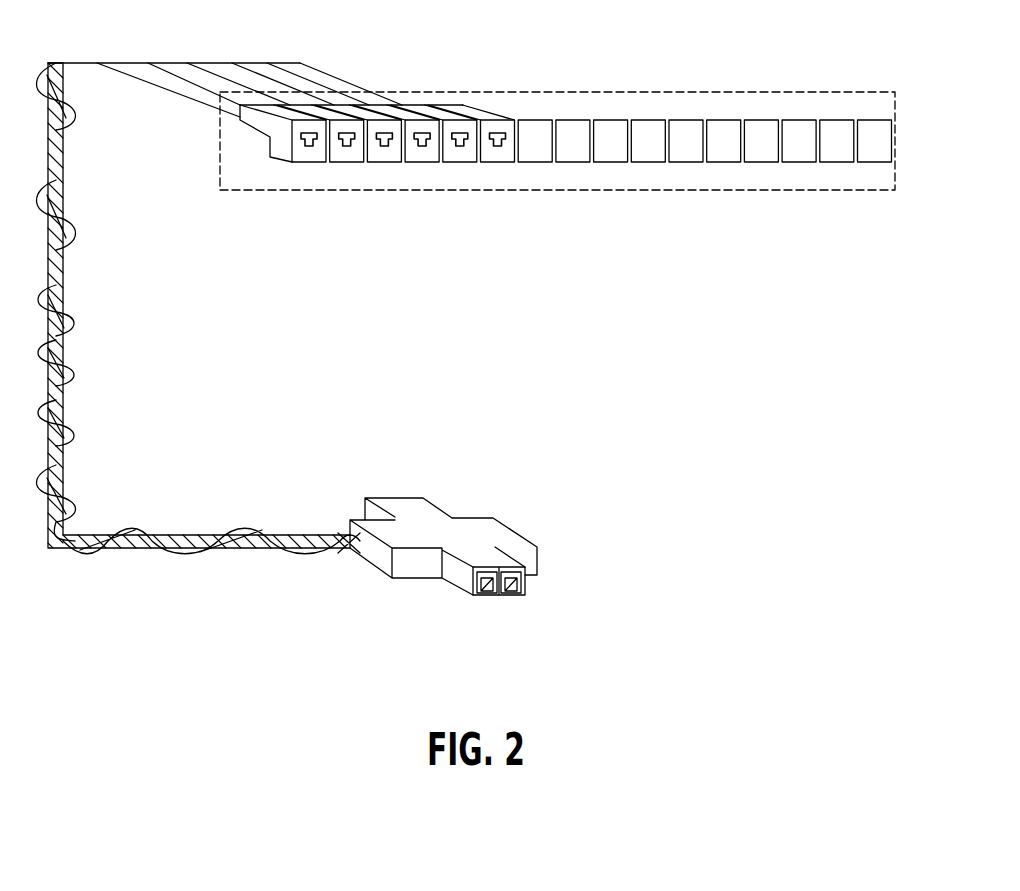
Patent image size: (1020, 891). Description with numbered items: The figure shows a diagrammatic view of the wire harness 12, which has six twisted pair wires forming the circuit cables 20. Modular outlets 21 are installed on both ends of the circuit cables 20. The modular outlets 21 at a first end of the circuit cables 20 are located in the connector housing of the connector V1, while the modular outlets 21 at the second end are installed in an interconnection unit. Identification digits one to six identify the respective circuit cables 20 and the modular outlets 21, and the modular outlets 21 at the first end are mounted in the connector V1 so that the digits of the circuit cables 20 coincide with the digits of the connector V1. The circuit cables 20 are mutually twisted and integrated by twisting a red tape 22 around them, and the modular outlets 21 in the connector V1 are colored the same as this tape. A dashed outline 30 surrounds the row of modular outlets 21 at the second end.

The wire harness 12 is at (192, 502).
The circuit cables 20 is at (210, 63).
The modular outlets 21 is at (502, 114).
The red tape 22 is at (257, 533).
The patch panel 30 is at (639, 71).
The connector V1 is at (442, 520).